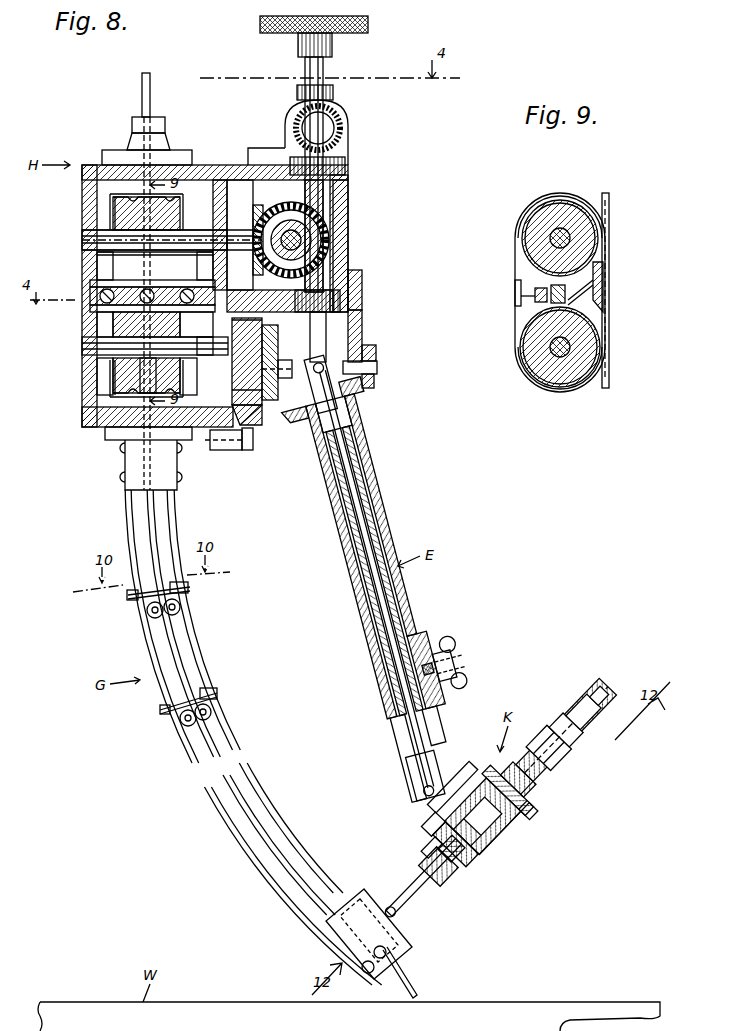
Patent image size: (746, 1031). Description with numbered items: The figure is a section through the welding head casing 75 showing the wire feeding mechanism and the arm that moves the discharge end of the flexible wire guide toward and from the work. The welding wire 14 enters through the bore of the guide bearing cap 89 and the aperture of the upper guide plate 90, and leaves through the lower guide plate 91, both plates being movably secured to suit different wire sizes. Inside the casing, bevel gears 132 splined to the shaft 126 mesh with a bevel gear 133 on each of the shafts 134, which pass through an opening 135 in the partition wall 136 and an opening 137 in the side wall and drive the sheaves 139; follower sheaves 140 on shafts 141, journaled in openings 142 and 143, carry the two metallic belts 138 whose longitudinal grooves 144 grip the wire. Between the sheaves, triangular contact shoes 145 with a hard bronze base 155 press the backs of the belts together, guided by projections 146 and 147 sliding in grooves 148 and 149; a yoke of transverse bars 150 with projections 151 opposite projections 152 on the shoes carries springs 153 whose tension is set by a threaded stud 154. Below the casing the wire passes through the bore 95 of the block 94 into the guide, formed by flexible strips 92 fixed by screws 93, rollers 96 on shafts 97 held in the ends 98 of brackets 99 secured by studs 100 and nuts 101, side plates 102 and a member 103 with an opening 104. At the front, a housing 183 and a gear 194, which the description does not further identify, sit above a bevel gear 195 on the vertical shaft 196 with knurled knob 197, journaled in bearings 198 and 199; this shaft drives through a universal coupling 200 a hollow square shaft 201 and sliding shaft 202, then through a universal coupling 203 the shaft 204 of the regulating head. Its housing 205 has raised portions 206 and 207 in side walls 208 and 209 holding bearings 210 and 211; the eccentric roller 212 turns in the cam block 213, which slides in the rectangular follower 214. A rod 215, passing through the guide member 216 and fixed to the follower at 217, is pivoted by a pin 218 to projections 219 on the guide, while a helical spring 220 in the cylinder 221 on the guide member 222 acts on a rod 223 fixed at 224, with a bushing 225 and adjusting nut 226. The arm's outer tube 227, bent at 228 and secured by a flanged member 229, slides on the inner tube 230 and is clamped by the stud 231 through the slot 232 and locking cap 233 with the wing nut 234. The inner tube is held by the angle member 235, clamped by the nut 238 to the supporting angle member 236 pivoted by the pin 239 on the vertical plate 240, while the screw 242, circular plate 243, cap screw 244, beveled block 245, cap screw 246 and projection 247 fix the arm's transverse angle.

In FIG. 8, the welding wire 14 is at (142, 88).
In FIG. 9, the welding wire 14 is at (609, 325).
In FIG. 8, the casing 75 is at (82, 206).
In FIG. 8, the guide bearing cap 89 is at (132, 122).
In FIG. 8, the upper guide plate 90 is at (102, 155).
In FIG. 8, the lower guide plate 91 is at (120, 440).
In FIG. 8, the flexible metallic strips 92 is at (177, 500).
In FIG. 8, the screws 93 is at (120, 477).
In FIG. 8, the block 94 is at (128, 505).
In FIG. 8, the bore 95 is at (153, 470).
In FIG. 8, the rollers 96 is at (182, 622).
In FIG. 8, the shafts 97 is at (180, 606).
In FIG. 8, the inwardly projecting ends 98 is at (150, 616).
In FIG. 8, the brackets 99 is at (130, 605).
In FIG. 8, the studs 100 is at (170, 572).
In FIG. 8, the nuts 101 is at (132, 585).
In FIG. 8, the side plates 102 is at (330, 940).
In FIG. 8, the member 103 is at (395, 955).
In FIG. 8, the opening 104 is at (395, 975).
In FIG. 8, the shaft 126 is at (300, 240).
In FIG. 8, the bevel gears 132 is at (323, 200).
In FIG. 8, the bevel gear 133 is at (262, 210).
In FIG. 8, the shafts 134 is at (172, 240).
In FIG. 9, the shafts 134 is at (551, 238).
In FIG. 8, the opening 135 is at (213, 220).
In FIG. 8, the partition wall 136 is at (240, 205).
In FIG. 8, the opening 137 is at (82, 238).
In FIG. 8, the belts 138 is at (115, 197).
In FIG. 9, the belts 138 is at (515, 292).
In FIG. 8, the driving sheaves 139 is at (113, 205).
In FIG. 9, the driving sheaves 139 is at (567, 200).
In FIG. 8, the follower sheaves 140 is at (113, 380).
In FIG. 9, the follower sheaves 140 is at (528, 330).
In FIG. 8, the shafts 141 is at (190, 345).
In FIG. 9, the shafts 141 is at (551, 347).
In FIG. 8, the opening 142 is at (82, 346).
In FIG. 8, the opening 143 is at (205, 340).
In FIG. 8, the longitudinal grooves 144 is at (170, 197).
In FIG. 9, the longitudinal grooves 144 is at (540, 195).
In FIG. 8, the contact shoes 145 is at (97, 253).
In FIG. 9, the contact shoes 145 is at (606, 300).
In FIG. 8, the projection 146 is at (97, 268).
In FIG. 8, the projection 147 is at (97, 325).
In FIG. 8, the groove 148 is at (90, 284).
In FIG. 8, the groove 149 is at (90, 308).
In FIG. 9, the transverse bars 150 is at (535, 298).
In FIG. 8, the projections 151 is at (113, 365).
In FIG. 9, the projections 151 is at (533, 290).
In FIG. 9, the projections 152 is at (565, 294).
In FIG. 9, the springs 153 is at (573, 300).
In FIG. 8, the threaded stud 154 is at (97, 320).
In FIG. 9, the hard bronze base 155 is at (603, 280).
In FIG. 8, the housing 183 is at (285, 130).
In FIG. 8, the gear 194 is at (340, 124).
In FIG. 8, the bevel gear 195 is at (333, 92).
In FIG. 8, the vertical shaft 196 is at (348, 204).
In FIG. 8, the knurled knob 197 is at (368, 22).
In FIG. 8, the bearing 198 is at (345, 165).
In FIG. 8, the bearing 199 is at (340, 298).
In FIG. 8, the universal coupling 200 is at (316, 365).
In FIG. 8, the hollow square shaped shaft 201 is at (355, 422).
In FIG. 8, the movable square shaped shaft 202 is at (330, 498).
In FIG. 8, the universal coupling 203 is at (440, 785).
In FIG. 8, the shaft 204 is at (445, 822).
In FIG. 8, the housing 205 is at (500, 828).
In FIG. 8, the raised portion 206 is at (480, 788).
In FIG. 8, the raised portion 207 is at (490, 860).
In FIG. 8, the side wall 208 is at (438, 855).
In FIG. 8, the side wall 209 is at (478, 885).
In FIG. 8, the bearing 210 is at (440, 840).
In FIG. 8, the bearing 211 is at (500, 850).
In FIG. 8, the roller 212 is at (480, 872).
In FIG. 8, the cam block 213 is at (505, 838).
In FIG. 8, the rectangular cam follower 214 is at (465, 890).
In FIG. 8, the rod 215 is at (440, 885).
In FIG. 8, the guide member 216 is at (432, 870).
In FIG. 8, the connection point 217 is at (455, 890).
In FIG. 8, the pin 218 is at (388, 912).
In FIG. 8, the upwardly extending projections 219 is at (420, 905).
In FIG. 8, the helical spring 220 is at (560, 760).
In FIG. 8, the cylinder 221 is at (555, 750).
In FIG. 8, the guide member 222 is at (520, 800).
In FIG. 8, the rod 223 is at (540, 765).
In FIG. 8, the connection point 224 is at (520, 822).
In FIG. 8, the bushing 225 is at (580, 705).
In FIG. 8, the nut 226 is at (604, 695).
In FIG. 8, the outer tube 227 is at (352, 600).
In FIG. 8, the bend 228 is at (420, 795).
In FIG. 8, the flanged member 229 is at (500, 800).
In FIG. 8, the inner tube 230 is at (282, 395).
In FIG. 8, the stud 231 is at (450, 660).
In FIG. 8, the longitudinal slot 232 is at (372, 470).
In FIG. 8, the arcuate shaped locking cap 233 is at (432, 645).
In FIG. 8, the wing nut 234 is at (462, 672).
In FIG. 8, the angle member 235 is at (362, 396).
In FIG. 8, the supporting angle member 236 is at (376, 350).
In FIG. 8, the clamp nut 238 is at (362, 330).
In FIG. 8, the pin 239 is at (377, 367).
In FIG. 8, the vertical plate 240 is at (362, 300).
In FIG. 8, the screw 242 is at (250, 335).
In FIG. 8, the flat circular plate 243 is at (255, 418).
In FIG. 8, the cap screw 244 is at (262, 405).
In FIG. 8, the beveled block 245 is at (250, 450).
In FIG. 8, the cap screw 246 is at (288, 400).
In FIG. 8, the projection 247 is at (220, 450).